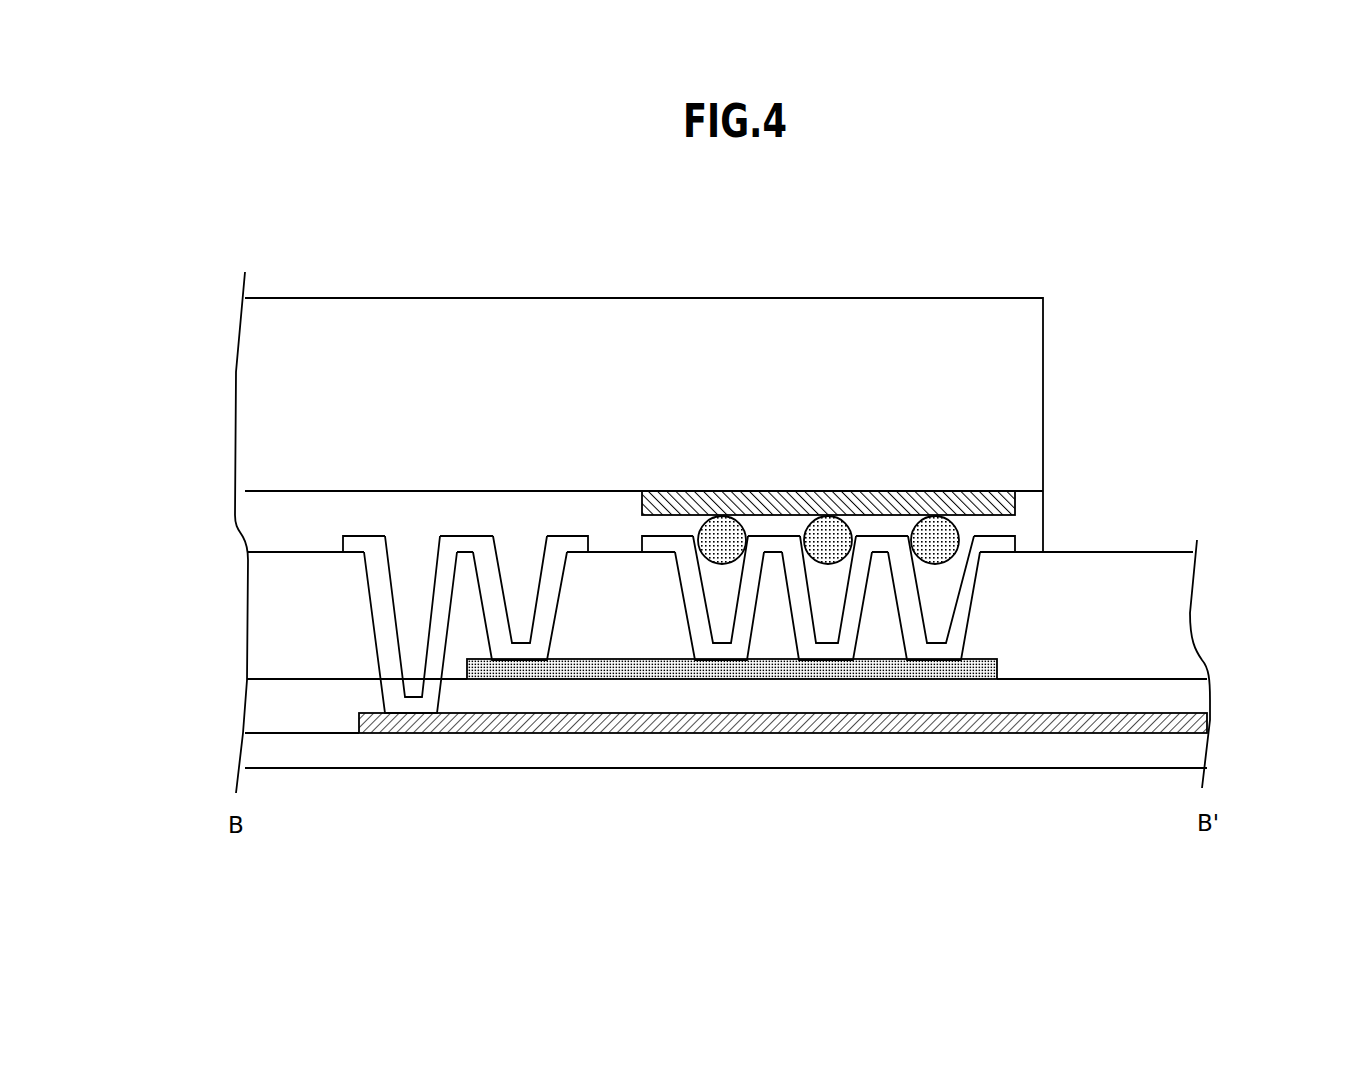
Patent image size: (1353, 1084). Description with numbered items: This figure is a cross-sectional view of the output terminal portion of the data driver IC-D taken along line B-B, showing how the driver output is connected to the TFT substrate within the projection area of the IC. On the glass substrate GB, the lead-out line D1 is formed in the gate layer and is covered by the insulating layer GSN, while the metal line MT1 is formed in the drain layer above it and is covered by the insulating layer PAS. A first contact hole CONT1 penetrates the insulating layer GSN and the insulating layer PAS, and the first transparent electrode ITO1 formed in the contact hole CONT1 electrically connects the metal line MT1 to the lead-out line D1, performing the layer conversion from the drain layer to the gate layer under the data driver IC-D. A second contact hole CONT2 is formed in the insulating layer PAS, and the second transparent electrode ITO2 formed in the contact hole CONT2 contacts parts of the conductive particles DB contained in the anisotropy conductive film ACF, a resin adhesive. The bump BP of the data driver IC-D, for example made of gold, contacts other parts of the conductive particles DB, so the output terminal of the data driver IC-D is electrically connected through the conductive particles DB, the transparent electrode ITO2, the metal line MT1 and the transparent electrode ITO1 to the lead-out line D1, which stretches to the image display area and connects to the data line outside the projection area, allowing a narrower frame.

The data driver IC IC-D is at (1025, 355).
The conductive particles DB is at (935, 527).
The bump BP is at (996, 491).
The anisotropy conductive film ACF is at (250, 519).
The second transparent electrode ITO2 is at (1003, 545).
The first transparent electrode ITO1 is at (385, 642).
The insulating layer PAS is at (262, 611).
The insulating layer GSN is at (262, 711).
The glass substrate GB is at (1195, 755).
The first contact hole CONT1 is at (517, 530).
The second contact hole CONT2 is at (930, 611).
The lead-out line D1 is at (608, 733).
The metal line MT1 is at (917, 672).